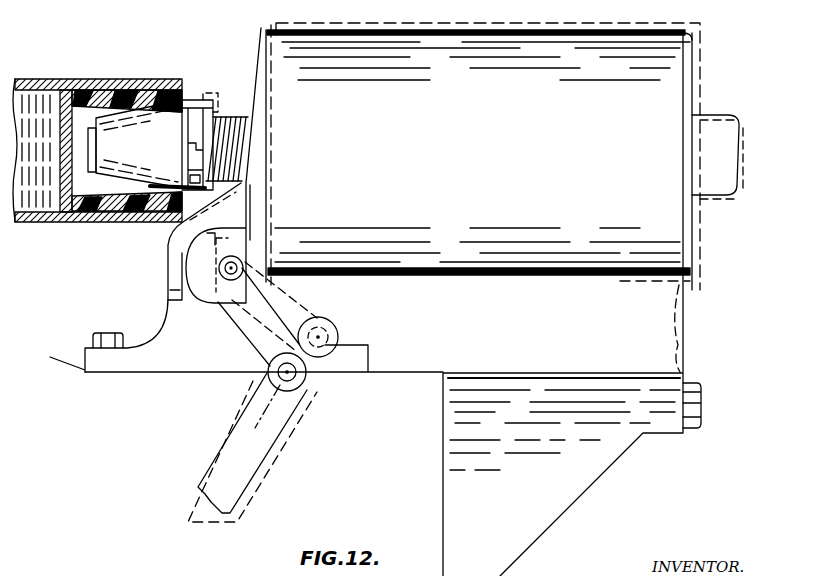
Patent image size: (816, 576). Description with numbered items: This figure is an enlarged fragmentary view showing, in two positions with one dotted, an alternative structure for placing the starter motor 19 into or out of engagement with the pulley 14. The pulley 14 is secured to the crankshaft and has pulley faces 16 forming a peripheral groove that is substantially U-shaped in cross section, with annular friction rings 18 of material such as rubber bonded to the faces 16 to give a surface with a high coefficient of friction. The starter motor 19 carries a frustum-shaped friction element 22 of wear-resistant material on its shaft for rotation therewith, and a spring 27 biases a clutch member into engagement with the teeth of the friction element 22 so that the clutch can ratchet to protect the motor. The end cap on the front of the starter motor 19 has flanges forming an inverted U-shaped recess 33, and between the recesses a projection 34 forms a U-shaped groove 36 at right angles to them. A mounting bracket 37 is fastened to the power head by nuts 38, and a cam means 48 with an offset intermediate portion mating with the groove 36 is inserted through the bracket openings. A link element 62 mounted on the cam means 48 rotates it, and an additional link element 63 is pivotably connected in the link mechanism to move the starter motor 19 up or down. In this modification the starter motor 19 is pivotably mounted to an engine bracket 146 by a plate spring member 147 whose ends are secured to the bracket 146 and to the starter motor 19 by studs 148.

The pulley 14 is at (98, 110).
The pulley faces 16 is at (147, 90).
The annular friction rings 18 is at (165, 91).
The starter motor 19 is at (600, 47).
The friction element 22 is at (172, 123).
The spring 27 is at (224, 118).
The U-shaped recess 33 is at (190, 241).
The projection 34 is at (221, 262).
The U-shaped groove 36 is at (220, 279).
The mounting bracket 37 is at (145, 362).
The nut 38 is at (95, 338).
The cam means 48 is at (242, 267).
The link element 62 is at (250, 342).
The link element 63 is at (232, 437).
The engine bracket 146 is at (587, 476).
The plate spring member 147 is at (684, 326).
The studs 148 is at (700, 407).